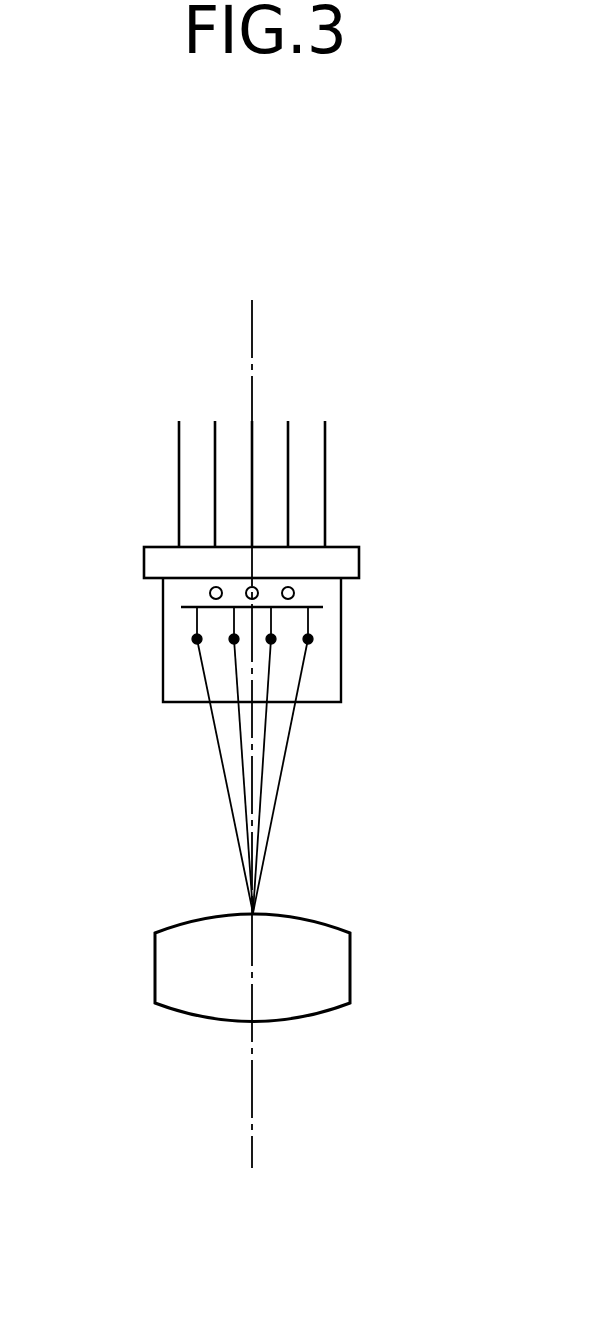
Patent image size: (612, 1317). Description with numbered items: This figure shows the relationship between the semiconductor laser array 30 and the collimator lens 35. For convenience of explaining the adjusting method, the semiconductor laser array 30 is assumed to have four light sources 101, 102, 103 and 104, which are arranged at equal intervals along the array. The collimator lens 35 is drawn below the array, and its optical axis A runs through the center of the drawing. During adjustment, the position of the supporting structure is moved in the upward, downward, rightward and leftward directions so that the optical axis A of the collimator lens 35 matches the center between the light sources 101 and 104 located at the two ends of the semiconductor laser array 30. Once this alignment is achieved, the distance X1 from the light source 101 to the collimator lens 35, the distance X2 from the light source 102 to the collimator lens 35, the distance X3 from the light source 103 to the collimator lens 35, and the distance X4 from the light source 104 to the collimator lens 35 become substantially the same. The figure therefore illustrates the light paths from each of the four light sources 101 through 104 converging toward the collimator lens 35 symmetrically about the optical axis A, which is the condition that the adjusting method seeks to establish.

The semiconductor laser array 30 is at (359, 547).
The light source 101 is at (195, 638).
The light source 102 is at (233, 641).
The light source 103 is at (273, 641).
The light source 104 is at (310, 638).
The distance X1 is at (222, 770).
The distance X2 is at (247, 830).
The distance X3 is at (263, 763).
The distance X4 is at (272, 830).
The collimator lens 35 is at (350, 972).
The optical axis A is at (272, 735).